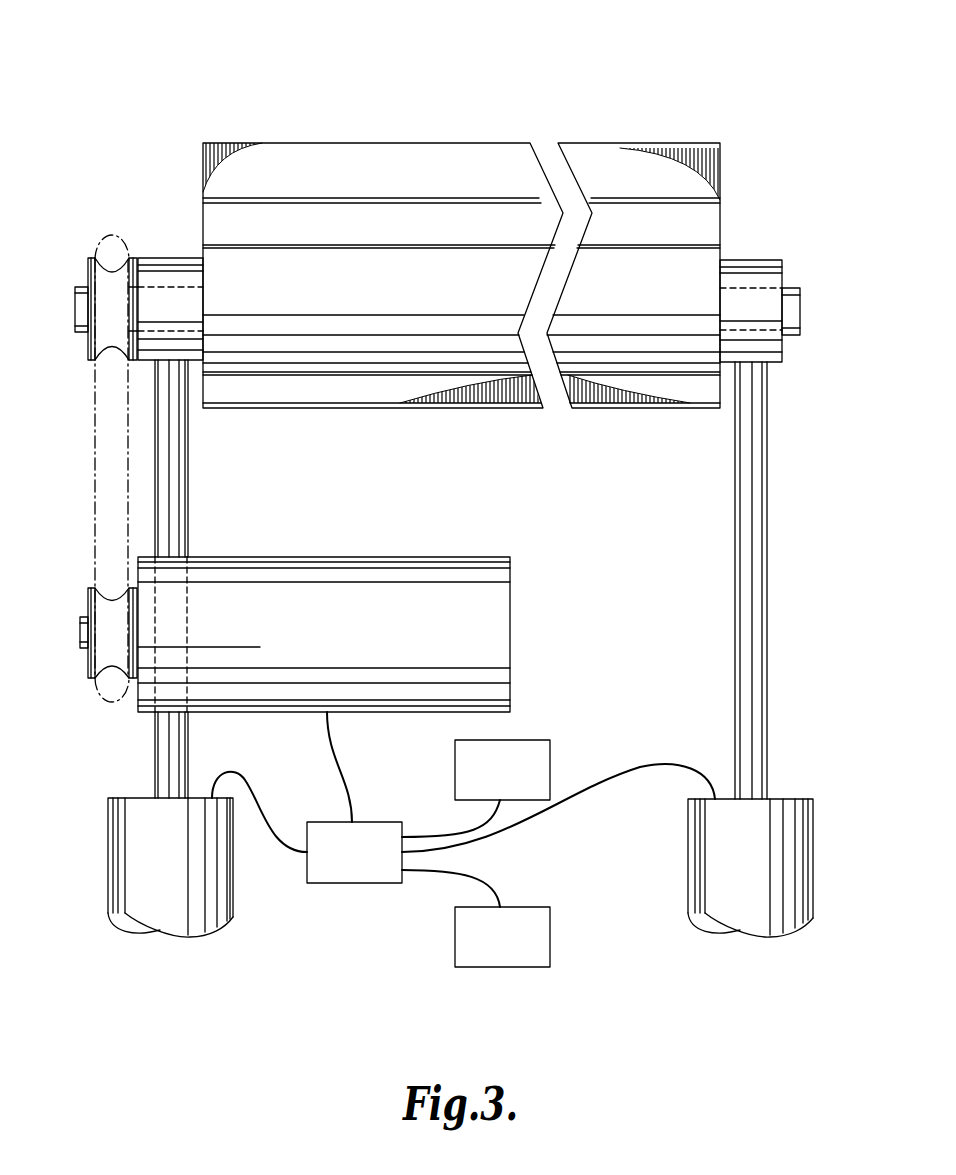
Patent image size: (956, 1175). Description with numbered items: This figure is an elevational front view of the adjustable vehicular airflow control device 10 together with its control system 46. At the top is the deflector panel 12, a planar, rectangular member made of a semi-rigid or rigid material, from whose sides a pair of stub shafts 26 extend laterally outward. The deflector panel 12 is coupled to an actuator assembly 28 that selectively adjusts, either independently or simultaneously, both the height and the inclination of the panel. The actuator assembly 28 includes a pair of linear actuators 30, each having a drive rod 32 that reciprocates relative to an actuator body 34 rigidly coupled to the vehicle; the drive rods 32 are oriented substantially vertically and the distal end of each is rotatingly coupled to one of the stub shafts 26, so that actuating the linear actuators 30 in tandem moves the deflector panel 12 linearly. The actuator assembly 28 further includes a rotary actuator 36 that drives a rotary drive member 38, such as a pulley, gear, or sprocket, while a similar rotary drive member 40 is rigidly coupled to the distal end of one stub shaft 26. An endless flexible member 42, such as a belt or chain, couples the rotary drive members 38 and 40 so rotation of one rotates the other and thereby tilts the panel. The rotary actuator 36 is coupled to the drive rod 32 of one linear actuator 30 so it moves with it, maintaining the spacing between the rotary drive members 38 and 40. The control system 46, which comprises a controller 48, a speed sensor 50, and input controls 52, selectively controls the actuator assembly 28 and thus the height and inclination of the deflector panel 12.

The adjustable vehicular airflow control device 10 is at (128, 96).
The deflector panel 12 is at (680, 150).
The stub shafts 26 is at (78, 300).
The actuator assembly 28 is at (96, 932).
The linear actuators 30 is at (104, 830).
The drive rod 32 is at (187, 462).
The actuator body 34 is at (108, 882).
The rotary actuator 36 is at (395, 557).
The rotary drive member 38 is at (88, 652).
The rotary drive member 40 is at (88, 340).
The endless flexible member 42 is at (95, 462).
The control system 46 is at (646, 994).
The controller 48 is at (340, 884).
The speed sensor 50 is at (497, 968).
The input controls 52 is at (535, 740).